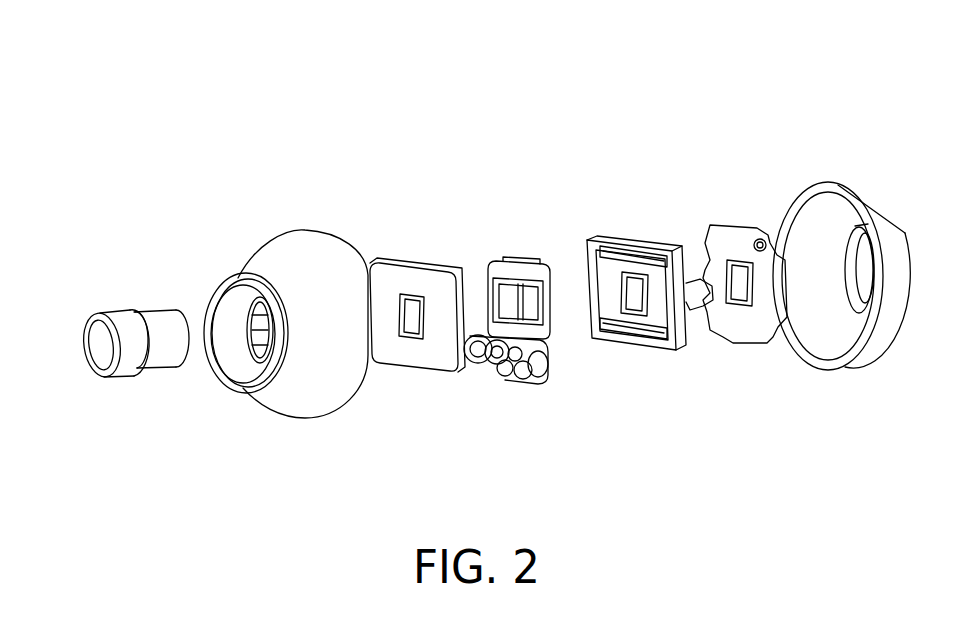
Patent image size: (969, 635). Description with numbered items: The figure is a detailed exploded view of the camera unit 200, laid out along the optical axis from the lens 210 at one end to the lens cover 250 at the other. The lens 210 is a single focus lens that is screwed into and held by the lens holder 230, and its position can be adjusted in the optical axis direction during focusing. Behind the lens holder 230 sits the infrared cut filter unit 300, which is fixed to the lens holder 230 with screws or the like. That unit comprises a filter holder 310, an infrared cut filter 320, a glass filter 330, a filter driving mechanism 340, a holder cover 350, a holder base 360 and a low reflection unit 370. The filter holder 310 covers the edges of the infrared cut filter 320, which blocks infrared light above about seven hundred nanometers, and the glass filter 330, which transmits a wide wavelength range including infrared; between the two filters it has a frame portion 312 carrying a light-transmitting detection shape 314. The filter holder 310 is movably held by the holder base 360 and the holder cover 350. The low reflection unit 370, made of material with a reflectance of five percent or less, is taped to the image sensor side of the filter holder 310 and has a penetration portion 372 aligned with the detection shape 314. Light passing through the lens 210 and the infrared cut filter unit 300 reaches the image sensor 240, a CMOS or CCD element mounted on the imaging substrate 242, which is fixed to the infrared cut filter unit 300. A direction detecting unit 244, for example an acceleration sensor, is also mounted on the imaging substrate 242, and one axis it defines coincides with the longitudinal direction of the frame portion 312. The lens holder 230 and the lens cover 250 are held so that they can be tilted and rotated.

The camera unit 200 is at (185, 93).
The lens 210 is at (152, 328).
The lens holder 230 is at (275, 272).
The infrared cut filter unit 300 is at (667, 100).
The filter holder 310 is at (517, 263).
The frame portion 312 is at (537, 380).
The detection shape 314 is at (482, 274).
The infrared cut filter 320 is at (467, 263).
The glass filter 330 is at (537, 270).
The filter driving mechanism 340 is at (475, 370).
The holder cover 350 is at (372, 262).
The holder base 360 is at (664, 252).
The low reflection unit 370 is at (565, 270).
The penetration portion 372 is at (595, 365).
The image sensor 240 is at (742, 300).
The imaging substrate 242 is at (750, 330).
The direction detecting unit 244 is at (760, 237).
The lens cover 250 is at (878, 222).